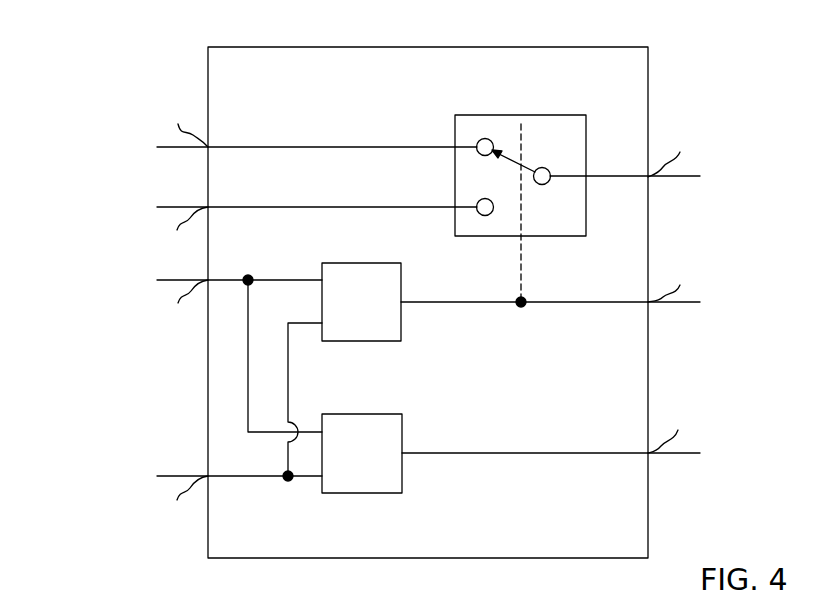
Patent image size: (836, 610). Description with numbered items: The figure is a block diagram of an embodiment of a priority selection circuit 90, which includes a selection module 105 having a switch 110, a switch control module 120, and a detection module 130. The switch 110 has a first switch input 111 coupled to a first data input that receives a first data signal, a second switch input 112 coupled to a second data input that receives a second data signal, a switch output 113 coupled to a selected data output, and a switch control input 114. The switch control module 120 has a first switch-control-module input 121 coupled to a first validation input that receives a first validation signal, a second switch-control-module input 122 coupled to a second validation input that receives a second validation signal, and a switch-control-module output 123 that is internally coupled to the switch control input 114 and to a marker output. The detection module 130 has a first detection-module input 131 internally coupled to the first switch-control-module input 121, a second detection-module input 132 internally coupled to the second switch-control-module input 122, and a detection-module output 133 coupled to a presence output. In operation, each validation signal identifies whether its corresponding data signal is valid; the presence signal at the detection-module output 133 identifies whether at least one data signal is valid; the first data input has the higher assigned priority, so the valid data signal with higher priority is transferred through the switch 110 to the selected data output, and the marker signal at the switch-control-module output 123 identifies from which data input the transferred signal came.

The priority selection circuit 90 is at (92, 38).
The selection module 105 is at (440, 47).
The switch 110 is at (518, 189).
The first switch input 111 is at (455, 143).
The second switch input 112 is at (455, 212).
The switch output 113 is at (588, 178).
The switch control input 114 is at (526, 240).
The switch control module 120 is at (401, 265).
The first switch-control-module input 121 is at (322, 280).
The second switch-control-module input 122 is at (321, 329).
The switch-control-module output 123 is at (403, 305).
The detection module 130 is at (402, 417).
The first detection-module input 131 is at (322, 430).
The second detection-module input 132 is at (313, 478).
The detection-module output 133 is at (403, 455).